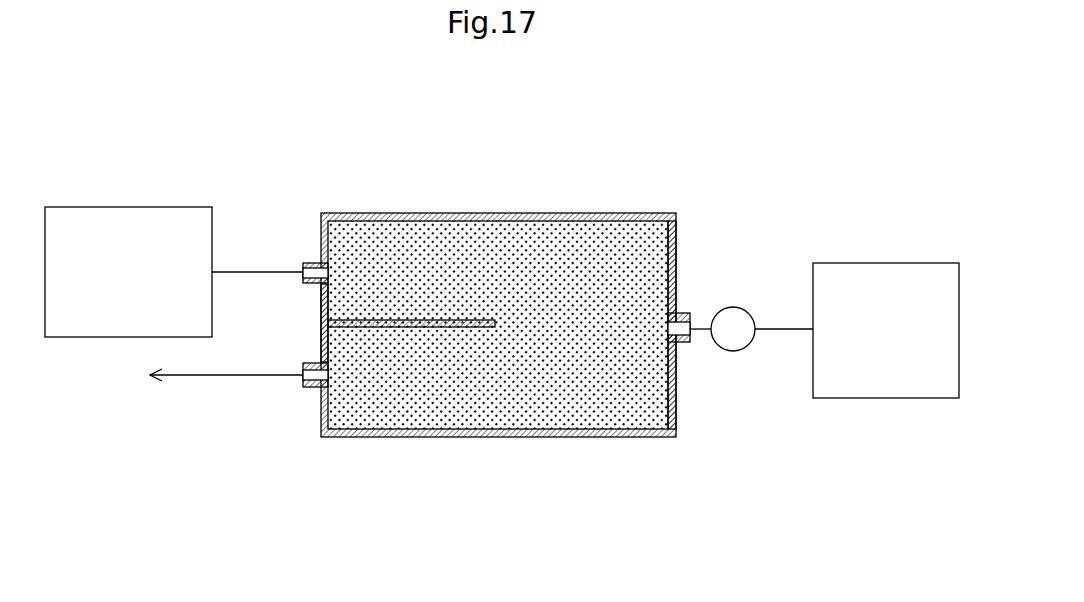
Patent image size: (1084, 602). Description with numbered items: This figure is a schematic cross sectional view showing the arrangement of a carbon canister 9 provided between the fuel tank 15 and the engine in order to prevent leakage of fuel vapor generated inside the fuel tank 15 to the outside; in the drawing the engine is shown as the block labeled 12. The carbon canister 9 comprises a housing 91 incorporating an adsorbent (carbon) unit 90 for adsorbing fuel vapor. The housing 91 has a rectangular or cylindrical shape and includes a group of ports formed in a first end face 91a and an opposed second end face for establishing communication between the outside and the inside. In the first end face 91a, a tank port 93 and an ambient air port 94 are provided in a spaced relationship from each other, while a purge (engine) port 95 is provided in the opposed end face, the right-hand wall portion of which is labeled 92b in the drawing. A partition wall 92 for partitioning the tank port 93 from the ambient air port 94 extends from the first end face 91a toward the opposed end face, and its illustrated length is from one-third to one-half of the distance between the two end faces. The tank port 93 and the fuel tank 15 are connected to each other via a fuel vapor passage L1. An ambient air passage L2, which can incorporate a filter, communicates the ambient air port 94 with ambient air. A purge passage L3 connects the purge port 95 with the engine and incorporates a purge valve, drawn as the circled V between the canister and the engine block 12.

The carbon canister 9 is at (500, 314).
The driver's seat 12 is at (888, 263).
The fuel tank 15 is at (122, 207).
The adsorbent unit 90 is at (608, 262).
The housing 91 is at (480, 437).
The first end face 91a is at (322, 306).
The partition wall 92 is at (425, 320).
The case wall portion 92b is at (677, 393).
The tank port 93 is at (313, 262).
The ambient air port 94 is at (313, 388).
The purge port 95 is at (683, 313).
The fuel vapor passage L1 is at (258, 270).
The ambient air passage L2 is at (252, 378).
The purge passage L3 is at (783, 322).